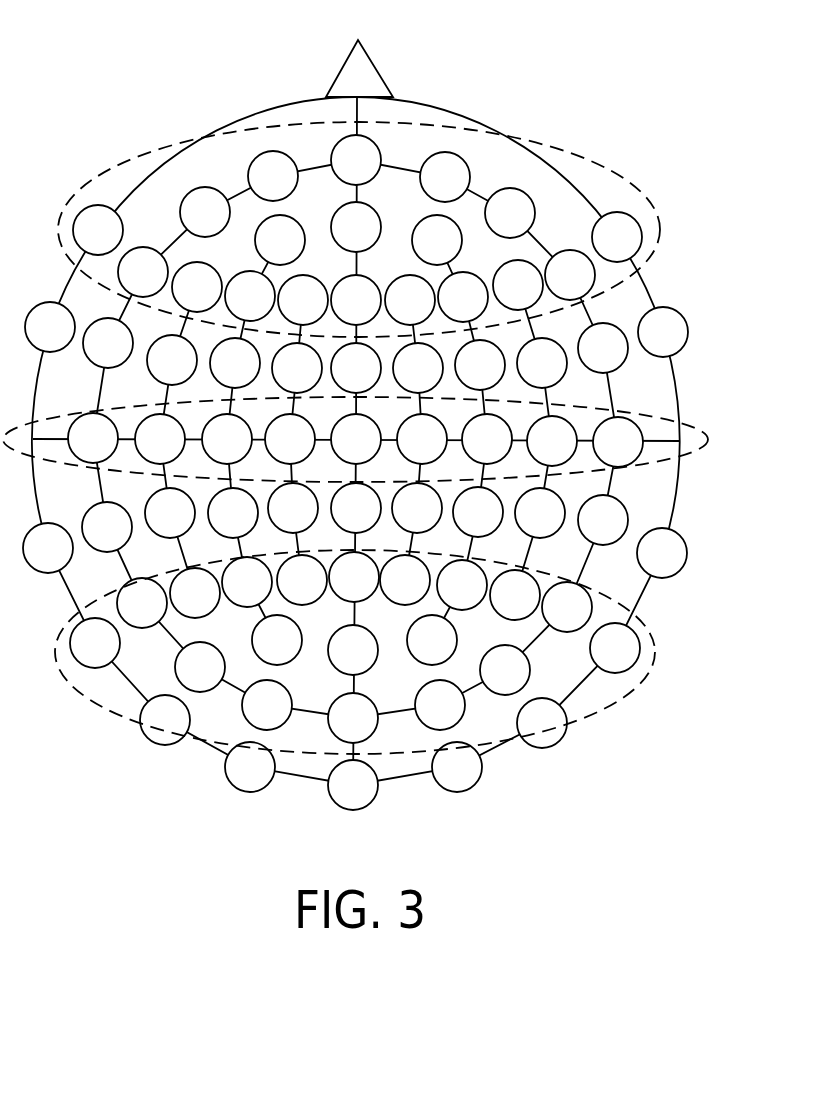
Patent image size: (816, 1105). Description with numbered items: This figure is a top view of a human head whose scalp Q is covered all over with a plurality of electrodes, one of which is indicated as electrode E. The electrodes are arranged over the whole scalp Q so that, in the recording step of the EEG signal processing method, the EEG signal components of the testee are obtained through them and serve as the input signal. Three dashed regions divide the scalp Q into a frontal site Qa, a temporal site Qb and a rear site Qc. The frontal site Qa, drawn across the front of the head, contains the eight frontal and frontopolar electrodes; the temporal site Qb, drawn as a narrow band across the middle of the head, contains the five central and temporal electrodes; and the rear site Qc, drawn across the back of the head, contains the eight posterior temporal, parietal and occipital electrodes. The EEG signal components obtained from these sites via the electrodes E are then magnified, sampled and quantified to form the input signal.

The scalp Q is at (424, 101).
The electrode E is at (459, 153).
The frontal site Qa is at (592, 163).
The temporal site Qb is at (697, 423).
The rear site Qc is at (648, 634).